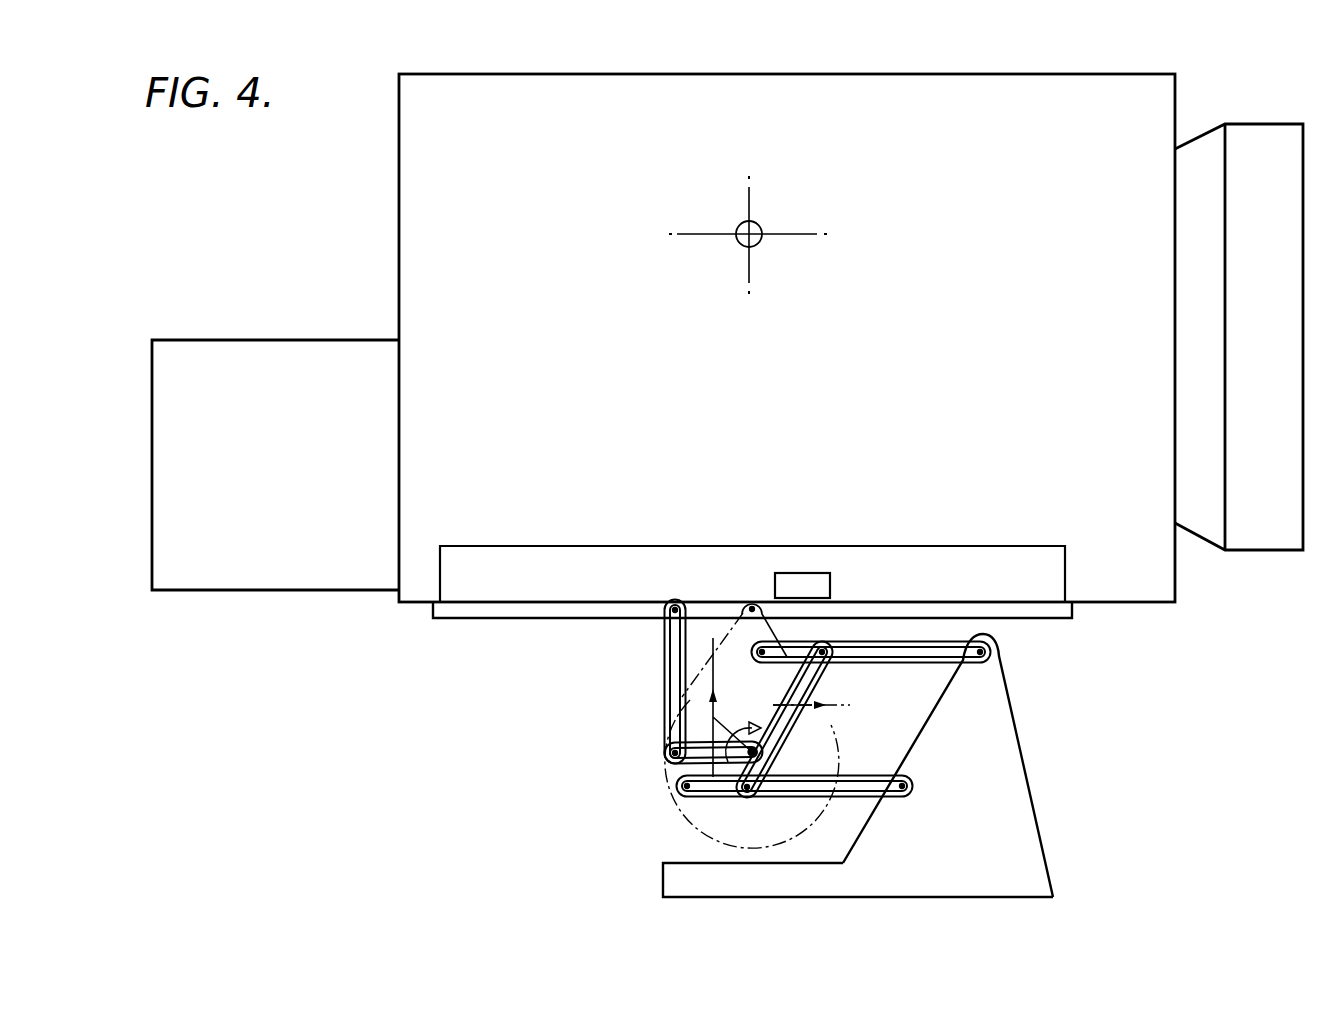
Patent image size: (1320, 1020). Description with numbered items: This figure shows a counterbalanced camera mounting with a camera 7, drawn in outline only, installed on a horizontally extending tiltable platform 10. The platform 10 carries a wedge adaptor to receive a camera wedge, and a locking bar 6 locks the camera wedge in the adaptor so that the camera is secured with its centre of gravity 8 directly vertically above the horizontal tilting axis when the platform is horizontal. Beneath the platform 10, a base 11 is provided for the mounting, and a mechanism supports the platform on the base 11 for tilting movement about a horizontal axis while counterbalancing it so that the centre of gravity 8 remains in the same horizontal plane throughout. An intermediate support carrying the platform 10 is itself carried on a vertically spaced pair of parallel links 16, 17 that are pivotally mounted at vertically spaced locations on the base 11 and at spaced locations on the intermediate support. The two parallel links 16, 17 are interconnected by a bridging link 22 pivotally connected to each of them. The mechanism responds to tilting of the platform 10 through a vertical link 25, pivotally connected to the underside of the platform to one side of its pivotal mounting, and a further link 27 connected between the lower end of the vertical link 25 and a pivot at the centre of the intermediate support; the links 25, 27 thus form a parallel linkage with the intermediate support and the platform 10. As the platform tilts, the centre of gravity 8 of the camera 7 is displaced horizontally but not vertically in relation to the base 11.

The camera 7 is at (415, 178).
The centre of gravity 8 is at (740, 228).
The locking bar 6 is at (797, 580).
The tiltable platform 10 is at (452, 610).
The vertical link 25 is at (665, 648).
The link 27 is at (700, 748).
The bridging link 22 is at (818, 668).
The parallel link 17 is at (858, 775).
The parallel link 16 is at (944, 661).
The base 11 is at (663, 875).